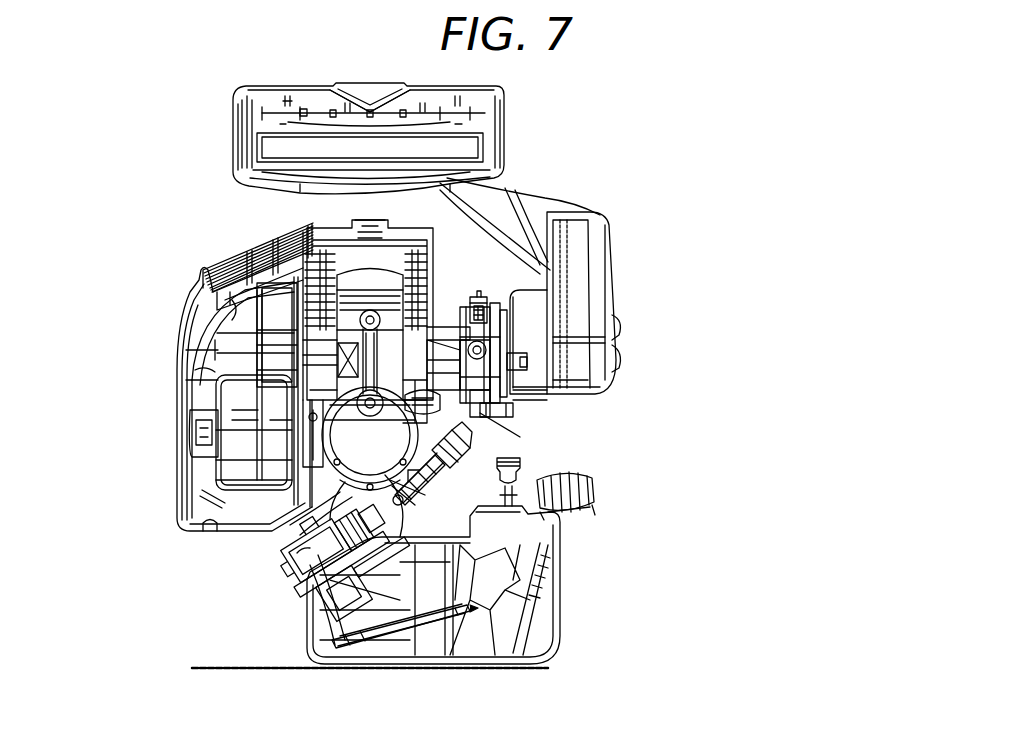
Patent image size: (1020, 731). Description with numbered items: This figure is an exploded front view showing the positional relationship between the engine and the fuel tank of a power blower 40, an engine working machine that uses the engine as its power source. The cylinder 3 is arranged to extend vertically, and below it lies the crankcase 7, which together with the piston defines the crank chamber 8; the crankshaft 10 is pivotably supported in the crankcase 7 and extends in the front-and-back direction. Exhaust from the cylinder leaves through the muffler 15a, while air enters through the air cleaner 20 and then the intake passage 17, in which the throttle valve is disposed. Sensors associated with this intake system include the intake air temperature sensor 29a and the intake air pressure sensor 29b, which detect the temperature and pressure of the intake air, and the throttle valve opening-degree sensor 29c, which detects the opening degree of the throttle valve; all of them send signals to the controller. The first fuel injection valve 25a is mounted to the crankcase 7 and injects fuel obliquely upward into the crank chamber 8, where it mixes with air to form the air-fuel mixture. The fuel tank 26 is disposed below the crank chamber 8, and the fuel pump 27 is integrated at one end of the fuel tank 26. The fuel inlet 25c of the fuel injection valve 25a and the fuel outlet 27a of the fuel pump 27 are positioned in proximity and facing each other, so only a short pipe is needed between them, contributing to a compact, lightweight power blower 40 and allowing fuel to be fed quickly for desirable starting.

The power blower 40 is at (545, 190).
The air cleaner 20 is at (614, 333).
The cylinder 3 is at (402, 302).
The muffler 15a is at (213, 297).
The crankshaft 10 is at (645, 455).
The intake air temperature sensor 29a is at (477, 342).
The intake air pressure sensor 29b is at (478, 312).
The throttle valve opening-degree sensor 29c is at (620, 447).
The intake passage 17 is at (484, 301).
The crank chamber 8 is at (430, 407).
The crankcase 7 is at (410, 483).
The first fuel injection valve 25a is at (463, 472).
The fuel tank 26 is at (562, 597).
The fuel pump 27 is at (285, 551).
The fuel outlet 27a is at (278, 551).
The fuel inlet 25c is at (403, 540).